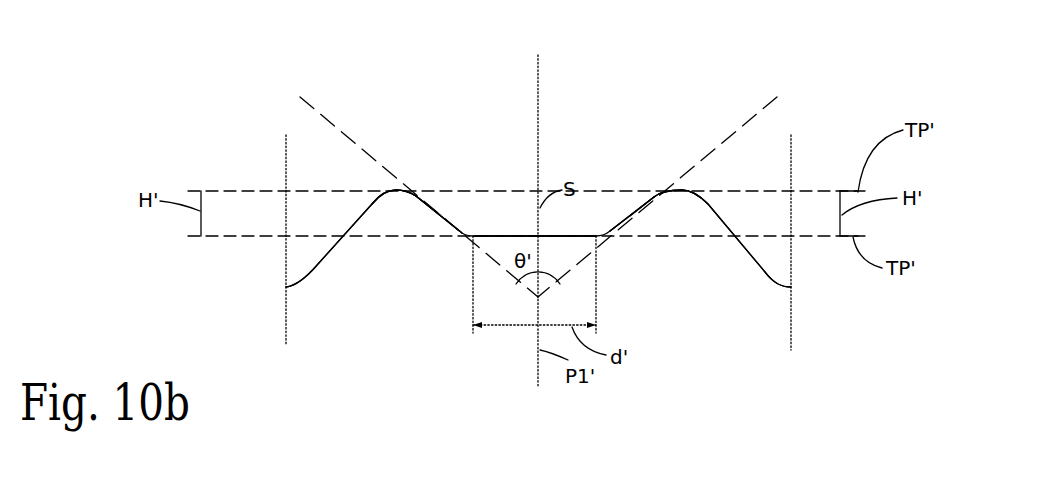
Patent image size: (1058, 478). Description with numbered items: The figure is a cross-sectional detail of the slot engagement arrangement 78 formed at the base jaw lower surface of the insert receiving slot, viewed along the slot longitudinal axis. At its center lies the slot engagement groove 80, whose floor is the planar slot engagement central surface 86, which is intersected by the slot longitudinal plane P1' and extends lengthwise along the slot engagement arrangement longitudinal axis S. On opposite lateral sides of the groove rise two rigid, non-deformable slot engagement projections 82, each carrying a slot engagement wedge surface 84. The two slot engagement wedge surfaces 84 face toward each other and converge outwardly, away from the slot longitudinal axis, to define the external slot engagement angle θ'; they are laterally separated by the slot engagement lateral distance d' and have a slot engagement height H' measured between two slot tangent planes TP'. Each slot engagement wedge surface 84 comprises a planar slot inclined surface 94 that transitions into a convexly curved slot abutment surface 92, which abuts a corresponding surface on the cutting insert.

The slot engagement arrangement 78 is at (615, 128).
The slot engagement groove 80 is at (495, 226).
The slot engagement projection 82 is at (358, 180).
The slot engagement wedge surface 84 is at (442, 216).
The slot engagement central surface 86 is at (512, 235).
The slot abutment surface 92 is at (414, 194).
The slot inclined surface 94 is at (430, 205).